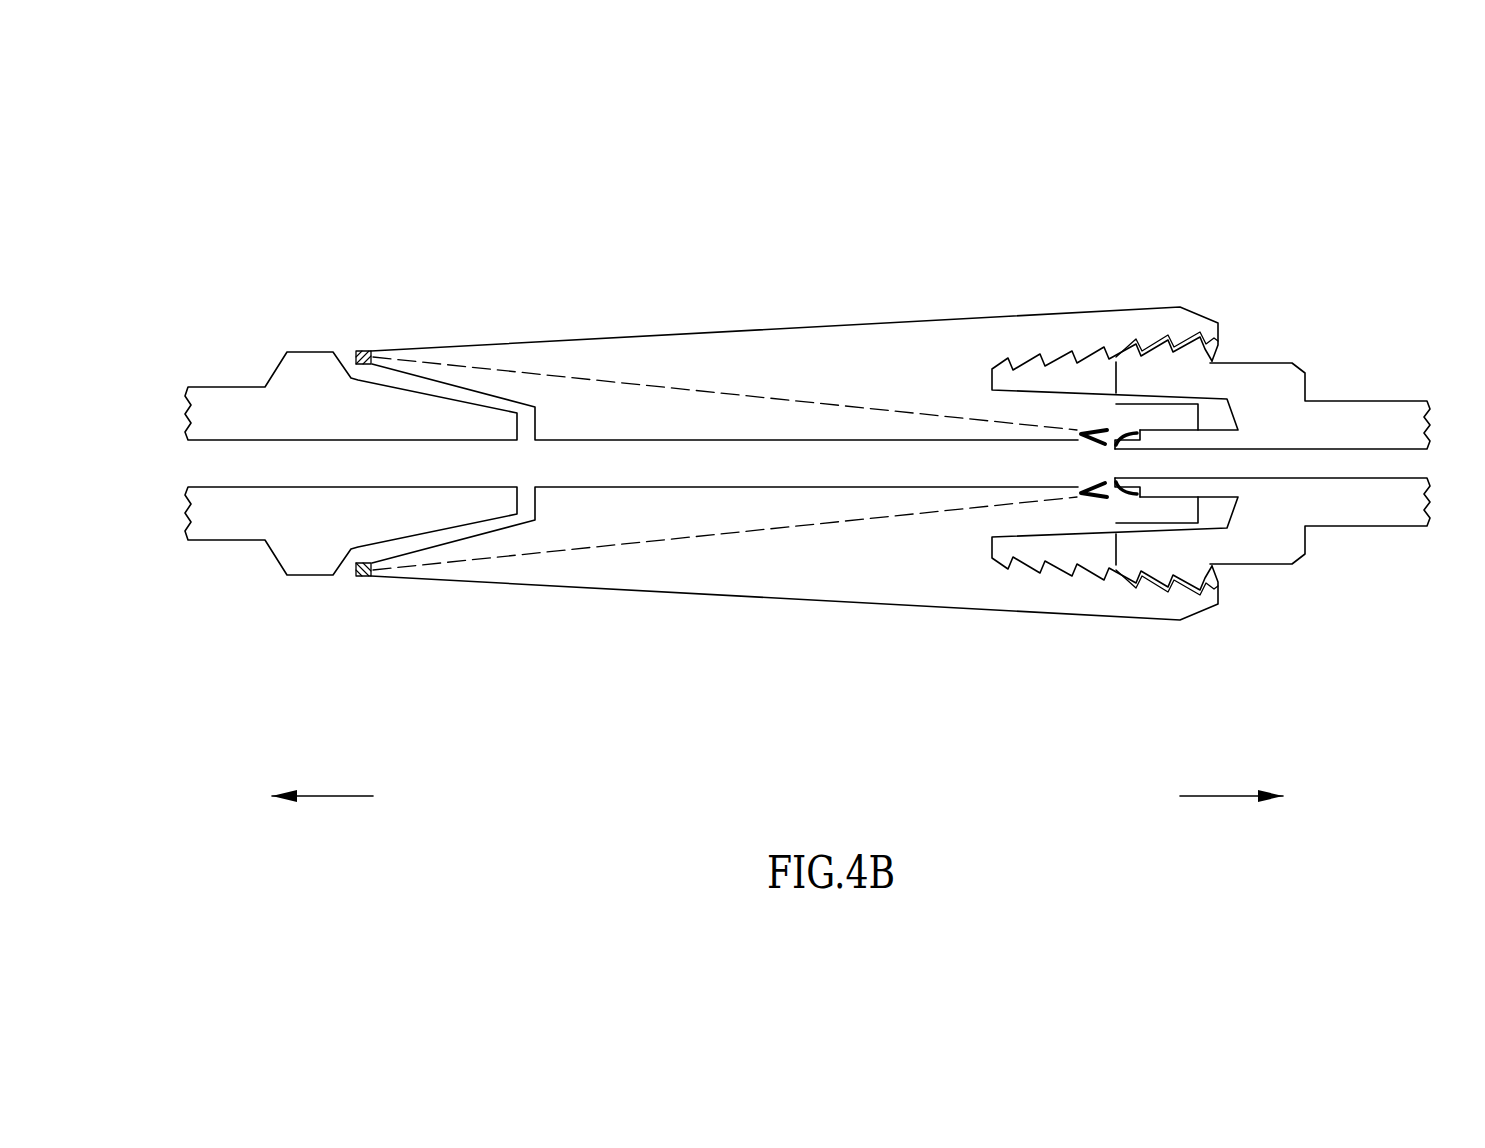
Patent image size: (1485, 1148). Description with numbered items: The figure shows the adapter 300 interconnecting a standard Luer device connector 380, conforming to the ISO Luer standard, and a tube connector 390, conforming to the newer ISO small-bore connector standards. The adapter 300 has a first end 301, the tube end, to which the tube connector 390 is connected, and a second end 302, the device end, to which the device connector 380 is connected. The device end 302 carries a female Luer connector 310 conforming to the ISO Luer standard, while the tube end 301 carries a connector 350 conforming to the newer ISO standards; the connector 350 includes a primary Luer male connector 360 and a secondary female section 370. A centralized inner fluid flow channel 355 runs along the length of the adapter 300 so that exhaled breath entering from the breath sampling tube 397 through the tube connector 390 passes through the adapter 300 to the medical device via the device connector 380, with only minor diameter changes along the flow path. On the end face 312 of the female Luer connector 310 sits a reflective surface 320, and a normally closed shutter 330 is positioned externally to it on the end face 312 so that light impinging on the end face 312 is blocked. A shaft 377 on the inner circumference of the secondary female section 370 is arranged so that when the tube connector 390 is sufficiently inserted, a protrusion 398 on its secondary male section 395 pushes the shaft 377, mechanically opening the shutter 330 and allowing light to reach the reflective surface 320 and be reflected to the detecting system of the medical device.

The adapter 300 is at (753, 157).
The first end 301 is at (1213, 796).
The second end 302 is at (333, 796).
The female Luer connector 310 is at (450, 278).
The end face 312 is at (368, 578).
The reflective surface 320 is at (367, 350).
The shutter 330 is at (360, 350).
The connector 350 is at (1115, 276).
The inner fluid flow channel 355 is at (882, 460).
The primary Luer male connector 360 is at (1170, 540).
The secondary female section 370 is at (1118, 497).
The shaft 377 is at (1090, 500).
The device connector 380 is at (230, 367).
The tube connector 390 is at (1352, 367).
The secondary male section 395 is at (1172, 442).
The breath sampling tube 397 is at (1360, 527).
The protrusion 398 is at (1126, 437).